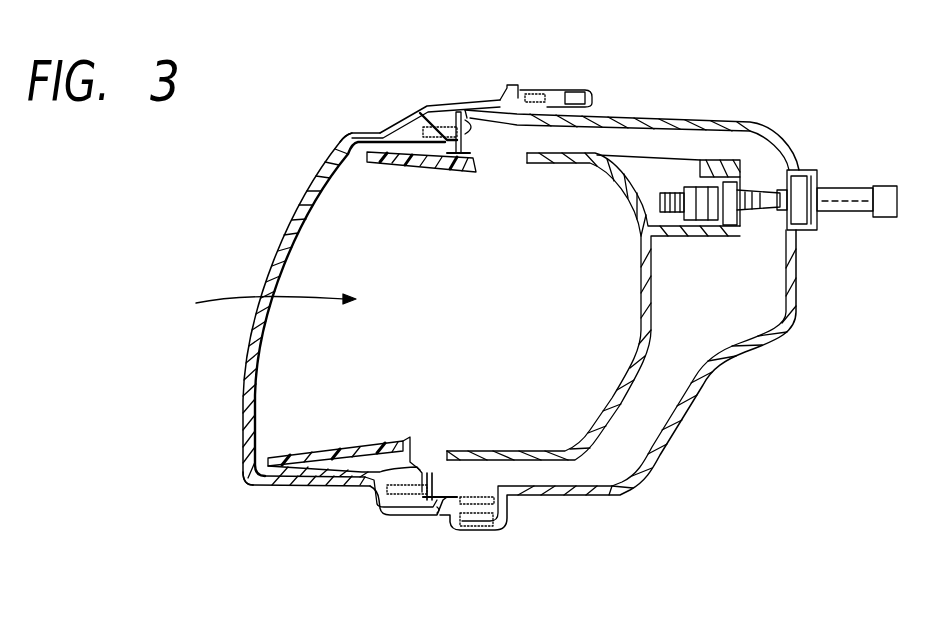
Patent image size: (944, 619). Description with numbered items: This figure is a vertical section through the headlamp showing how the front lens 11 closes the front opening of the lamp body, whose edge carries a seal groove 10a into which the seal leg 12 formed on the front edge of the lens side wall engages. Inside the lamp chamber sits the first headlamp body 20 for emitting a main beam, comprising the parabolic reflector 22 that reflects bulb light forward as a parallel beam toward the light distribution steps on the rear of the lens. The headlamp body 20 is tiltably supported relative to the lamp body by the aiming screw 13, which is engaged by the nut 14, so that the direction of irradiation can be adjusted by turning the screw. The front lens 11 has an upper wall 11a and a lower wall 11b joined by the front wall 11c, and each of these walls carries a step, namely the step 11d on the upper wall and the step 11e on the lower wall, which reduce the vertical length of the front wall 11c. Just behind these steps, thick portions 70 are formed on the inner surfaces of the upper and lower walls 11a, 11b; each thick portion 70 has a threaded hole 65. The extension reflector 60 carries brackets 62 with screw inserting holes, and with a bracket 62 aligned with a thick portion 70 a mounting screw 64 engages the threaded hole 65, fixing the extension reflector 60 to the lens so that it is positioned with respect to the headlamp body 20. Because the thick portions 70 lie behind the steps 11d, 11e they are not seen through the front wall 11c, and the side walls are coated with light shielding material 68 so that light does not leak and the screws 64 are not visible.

The seal groove 10a is at (598, 97).
The front lens 11 is at (282, 246).
The upper wall 11a is at (373, 132).
The lower wall 11b is at (284, 483).
The front wall 11c is at (295, 313).
The step 11d is at (394, 131).
The step 11e is at (380, 500).
The seal leg 12 is at (548, 101).
The aiming screw 13 is at (848, 198).
The nut 14 is at (702, 187).
The first headlamp body 20 is at (258, 306).
The parabolic reflector 22 is at (613, 187).
The extension reflector 60 is at (334, 445).
The bracket 62 is at (468, 119).
The mounting screw 64 is at (488, 106).
The threaded hole 65 is at (424, 127).
The light shielding material 68 is at (348, 133).
The thick portion 70 is at (405, 176).